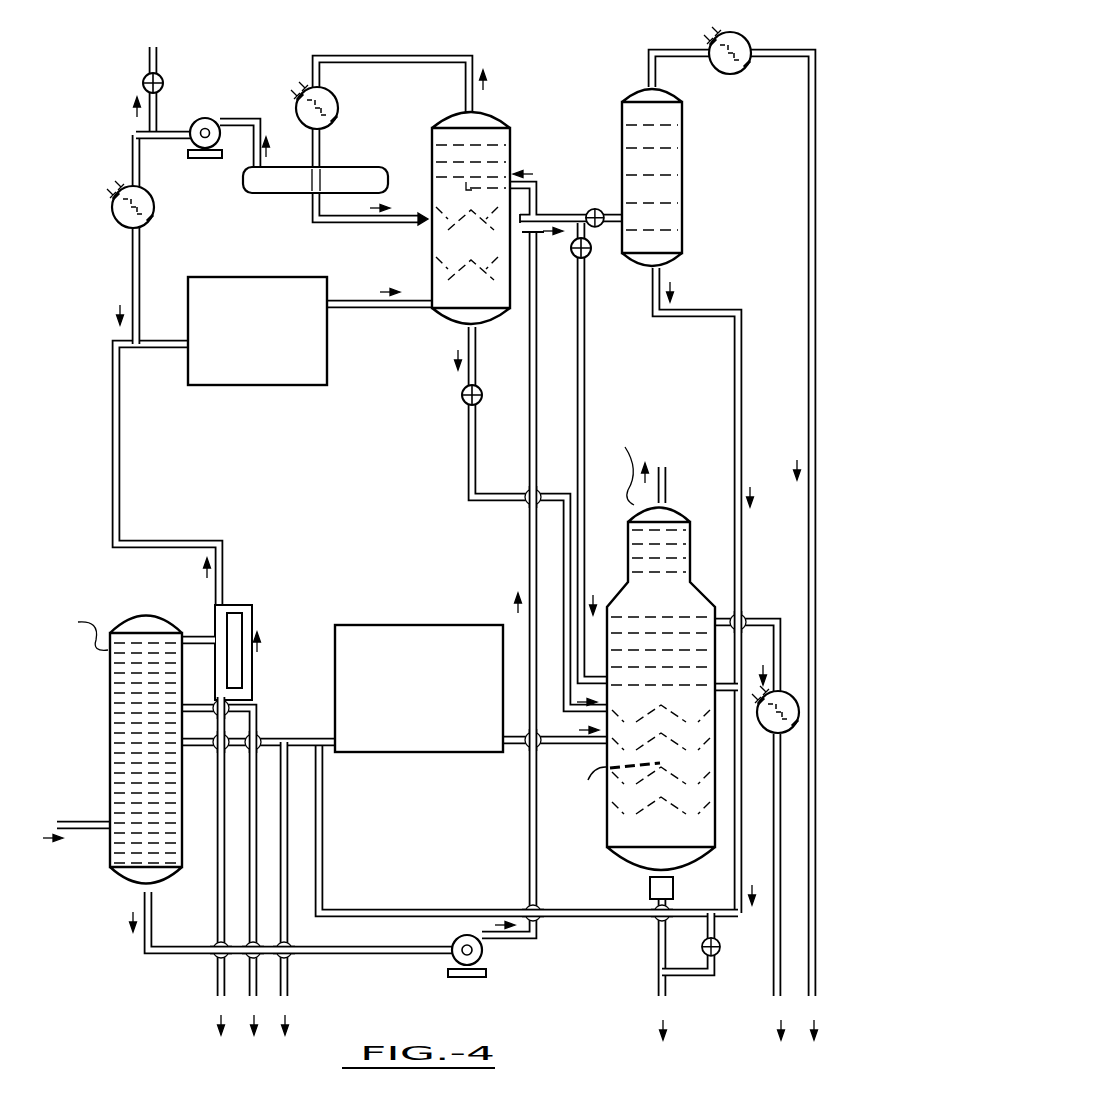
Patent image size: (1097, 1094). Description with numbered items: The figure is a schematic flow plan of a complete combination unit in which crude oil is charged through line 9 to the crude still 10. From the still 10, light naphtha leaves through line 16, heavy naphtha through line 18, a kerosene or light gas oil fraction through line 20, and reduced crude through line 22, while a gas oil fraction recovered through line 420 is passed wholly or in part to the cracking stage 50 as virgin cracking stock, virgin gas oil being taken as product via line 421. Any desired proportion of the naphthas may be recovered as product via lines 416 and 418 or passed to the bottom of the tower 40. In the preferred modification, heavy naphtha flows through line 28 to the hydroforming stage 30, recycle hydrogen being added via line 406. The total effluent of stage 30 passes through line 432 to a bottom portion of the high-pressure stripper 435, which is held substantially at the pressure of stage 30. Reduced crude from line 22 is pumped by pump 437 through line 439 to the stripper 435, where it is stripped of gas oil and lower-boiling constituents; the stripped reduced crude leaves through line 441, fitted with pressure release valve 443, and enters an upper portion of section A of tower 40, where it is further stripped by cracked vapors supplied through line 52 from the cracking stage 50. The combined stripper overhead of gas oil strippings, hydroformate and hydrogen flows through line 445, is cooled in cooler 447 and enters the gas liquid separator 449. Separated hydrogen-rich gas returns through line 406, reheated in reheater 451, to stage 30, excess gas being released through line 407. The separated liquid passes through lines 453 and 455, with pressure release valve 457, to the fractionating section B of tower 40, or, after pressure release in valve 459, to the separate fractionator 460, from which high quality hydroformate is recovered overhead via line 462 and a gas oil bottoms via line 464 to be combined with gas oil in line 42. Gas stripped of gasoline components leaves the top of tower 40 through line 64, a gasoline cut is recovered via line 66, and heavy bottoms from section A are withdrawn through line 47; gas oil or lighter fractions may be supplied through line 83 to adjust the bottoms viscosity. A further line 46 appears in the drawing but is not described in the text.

The line 9 is at (92, 822).
The crude still 10 is at (108, 733).
The line 16 is at (199, 638).
The line 18 is at (197, 647).
The line 20 is at (260, 706).
The line 22 is at (196, 958).
The line 28 is at (124, 410).
The hydroforming stage 30 is at (186, 372).
The tower 40 is at (604, 840).
The line 42 is at (734, 893).
The line 46 is at (458, 906).
The line 47 is at (657, 946).
The cracking stage 50 is at (452, 624).
The line 52 is at (608, 768).
The line 64 is at (668, 485).
The line 66 is at (755, 618).
The line 83 is at (716, 970).
The line 406 is at (167, 140).
The line 407 is at (163, 101).
The line 416 is at (224, 572).
The line 418 is at (216, 910).
The line 420 is at (320, 746).
The line 421 is at (292, 970).
The line 432 is at (404, 310).
The high-pressure stripper 435 is at (430, 265).
The pump 437 is at (484, 958).
The line 439 is at (529, 392).
The line 441 is at (470, 440).
The pressure release valve 443 is at (461, 394).
The line 445 is at (447, 70).
The cooler 447 is at (338, 104).
The gas liquid separator 449 is at (315, 181).
The reheater 451 is at (110, 206).
The line 453 is at (379, 228).
The line 455 is at (584, 368).
The pressure release valve 457 is at (592, 256).
The valve 459 is at (604, 206).
The fractionator 460 is at (683, 116).
The line 462 is at (808, 212).
The line 464 is at (734, 358).
The section A is at (580, 799).
The section B is at (706, 598).